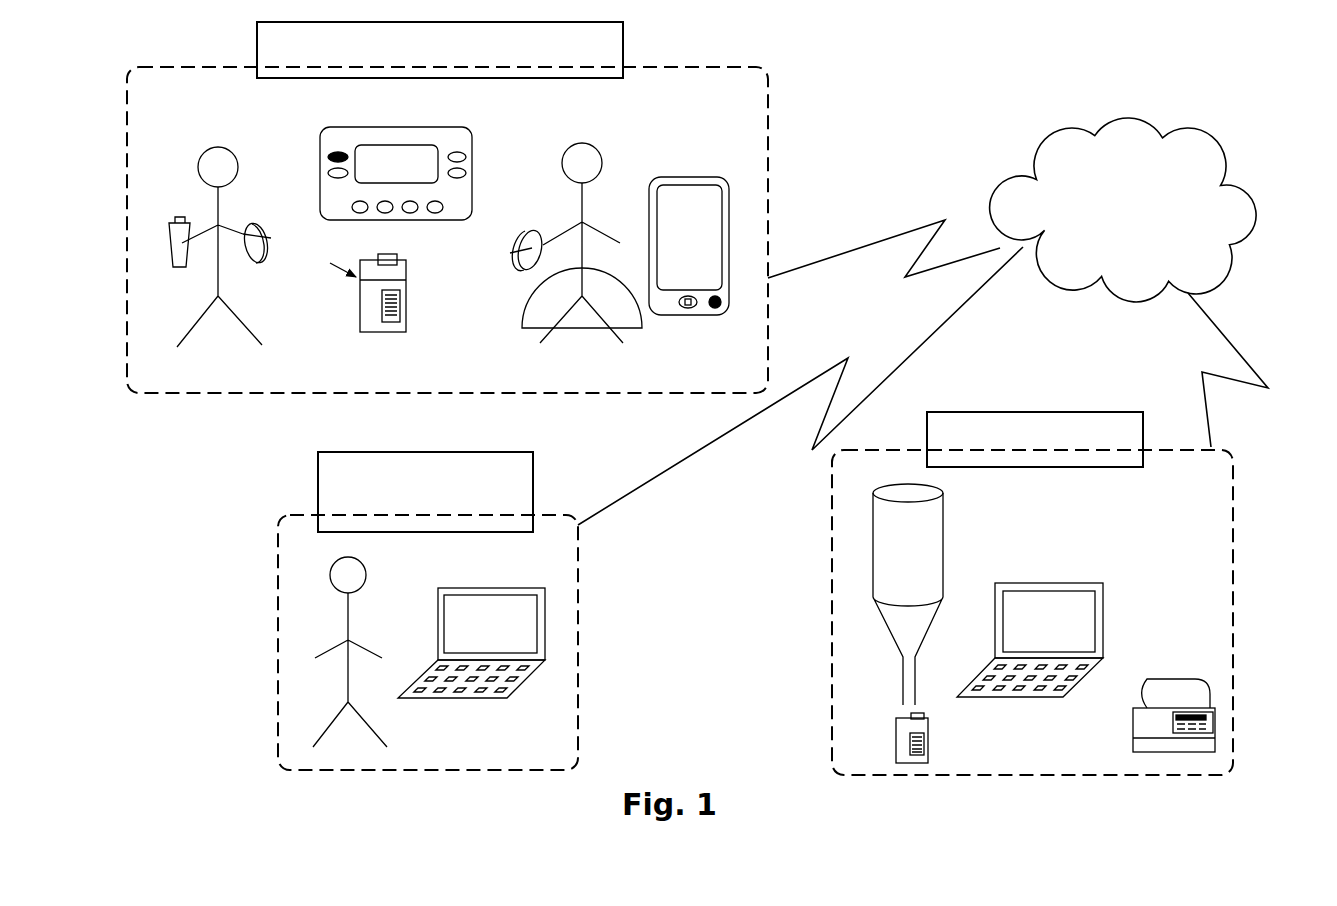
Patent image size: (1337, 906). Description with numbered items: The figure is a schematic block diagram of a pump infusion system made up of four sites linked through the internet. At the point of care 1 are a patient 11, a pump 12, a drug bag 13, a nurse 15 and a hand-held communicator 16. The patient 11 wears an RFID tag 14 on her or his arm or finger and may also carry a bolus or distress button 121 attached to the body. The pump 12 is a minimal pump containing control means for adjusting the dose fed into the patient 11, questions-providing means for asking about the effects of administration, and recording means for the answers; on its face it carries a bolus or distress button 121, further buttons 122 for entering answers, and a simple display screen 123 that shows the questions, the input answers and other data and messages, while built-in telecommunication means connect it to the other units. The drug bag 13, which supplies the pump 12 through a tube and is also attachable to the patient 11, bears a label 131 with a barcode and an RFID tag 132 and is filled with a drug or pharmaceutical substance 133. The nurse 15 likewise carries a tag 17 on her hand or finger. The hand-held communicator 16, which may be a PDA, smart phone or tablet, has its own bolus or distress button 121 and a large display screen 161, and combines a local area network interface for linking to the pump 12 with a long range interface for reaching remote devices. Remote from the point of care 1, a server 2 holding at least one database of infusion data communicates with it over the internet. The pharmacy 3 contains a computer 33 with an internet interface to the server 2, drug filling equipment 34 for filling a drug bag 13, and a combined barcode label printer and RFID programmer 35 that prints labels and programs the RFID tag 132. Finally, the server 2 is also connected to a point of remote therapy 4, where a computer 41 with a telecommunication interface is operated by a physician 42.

The point of care 1 is at (772, 124).
The server 2 is at (1234, 155).
The pharmacy 3 is at (1242, 455).
The point of remote therapy 4 is at (583, 584).
The patient 11 is at (206, 157).
The pump 12 is at (365, 171).
The drug bag 13 is at (932, 742).
The RFID tag 14 is at (263, 263).
The nurse 15 is at (559, 155).
The hand-held communicator 16 is at (691, 211).
The tag 17 is at (531, 271).
The computer 33 is at (1064, 580).
The drug filling equipment 34 is at (947, 528).
The combined barcode label printer and RFID programmer 35 is at (1149, 674).
The computer 41 is at (545, 628).
The physician 42 is at (364, 568).
The bolus or distress button 121 is at (170, 270).
The buttons 122 is at (360, 208).
The display screen 123 is at (388, 153).
The label 131 is at (399, 294).
The RFID tag 132 is at (402, 257).
The drug or pharmaceutical substance 133 is at (397, 280).
The large display screen 161 is at (707, 235).